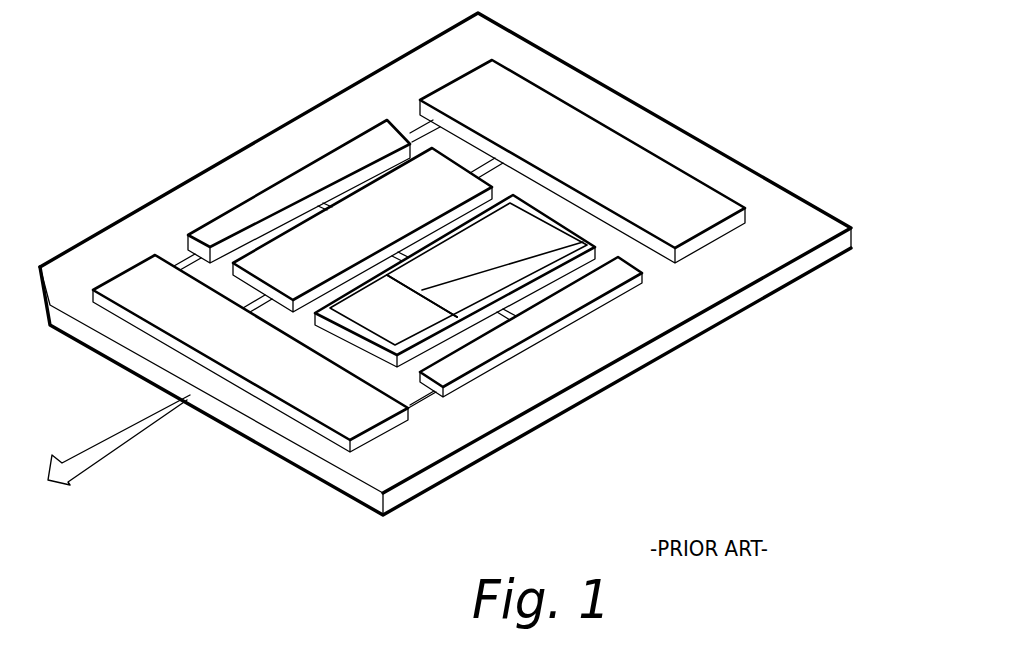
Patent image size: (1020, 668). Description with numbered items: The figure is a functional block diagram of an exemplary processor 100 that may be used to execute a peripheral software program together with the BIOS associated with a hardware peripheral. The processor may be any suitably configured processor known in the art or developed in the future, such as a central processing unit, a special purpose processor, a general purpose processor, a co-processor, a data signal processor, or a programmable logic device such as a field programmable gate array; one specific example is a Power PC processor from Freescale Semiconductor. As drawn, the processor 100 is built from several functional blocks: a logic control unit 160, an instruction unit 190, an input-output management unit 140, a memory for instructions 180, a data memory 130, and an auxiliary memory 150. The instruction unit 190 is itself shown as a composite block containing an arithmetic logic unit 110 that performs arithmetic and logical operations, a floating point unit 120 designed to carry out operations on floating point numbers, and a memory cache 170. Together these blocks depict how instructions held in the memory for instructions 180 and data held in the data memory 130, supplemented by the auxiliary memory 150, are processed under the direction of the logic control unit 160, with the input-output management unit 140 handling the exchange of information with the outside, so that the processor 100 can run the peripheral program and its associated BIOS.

The processor 100 is at (725, 110).
The arithmetic logic unit (ALU) 110 is at (512, 220).
The floating point unit (FPU) 120 is at (520, 257).
The data memory 130 is at (450, 368).
The input-output management unit 140 is at (143, 277).
The auxiliary memory 150 is at (462, 100).
The logic control unit 160 is at (362, 207).
The memory cache 170 is at (417, 323).
The memory for instructions 180 is at (222, 230).
The instruction unit 190 is at (574, 261).